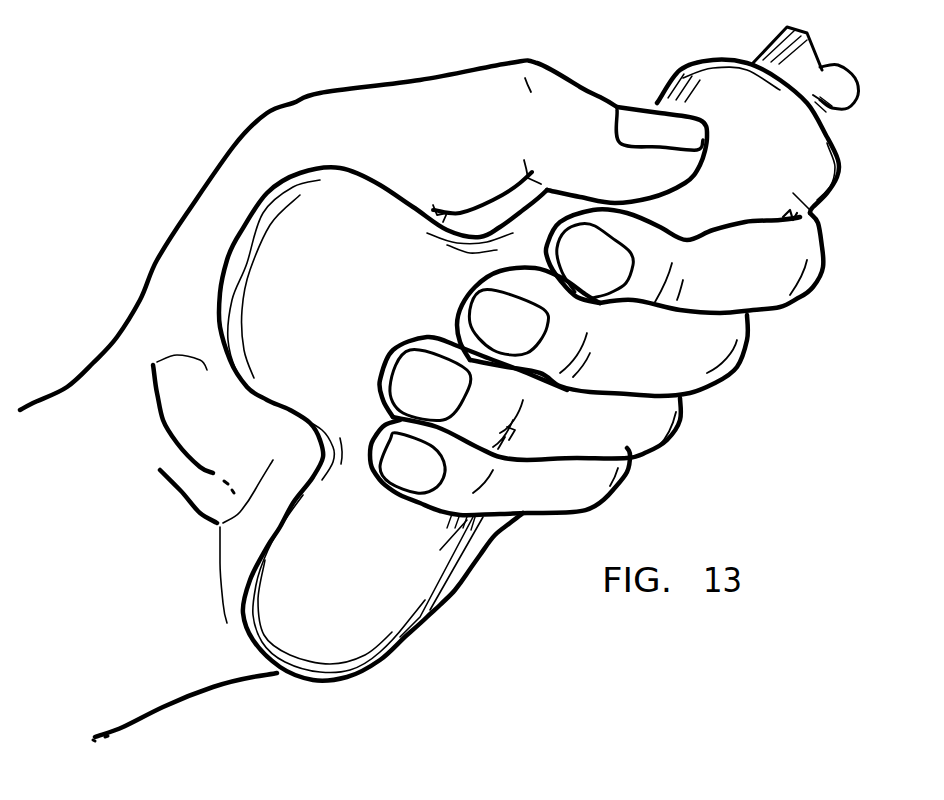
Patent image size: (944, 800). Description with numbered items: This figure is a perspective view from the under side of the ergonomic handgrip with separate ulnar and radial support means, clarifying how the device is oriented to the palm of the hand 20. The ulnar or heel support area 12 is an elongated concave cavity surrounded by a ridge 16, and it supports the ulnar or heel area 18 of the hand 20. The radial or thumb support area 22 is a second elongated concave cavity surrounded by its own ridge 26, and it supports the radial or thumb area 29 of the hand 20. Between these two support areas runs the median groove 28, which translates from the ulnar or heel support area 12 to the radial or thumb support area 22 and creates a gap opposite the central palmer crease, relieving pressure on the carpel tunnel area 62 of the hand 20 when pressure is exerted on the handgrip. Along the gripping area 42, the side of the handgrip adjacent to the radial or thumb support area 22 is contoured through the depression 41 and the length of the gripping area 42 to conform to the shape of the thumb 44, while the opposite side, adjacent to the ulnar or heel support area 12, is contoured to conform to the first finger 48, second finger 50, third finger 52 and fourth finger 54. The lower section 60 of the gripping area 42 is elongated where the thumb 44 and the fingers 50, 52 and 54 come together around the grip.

The ulnar or heel support area 12 is at (372, 678).
The ridge 16 is at (289, 681).
The ulnar or heel area 18 is at (450, 583).
The hand 20 is at (228, 128).
The radial or thumb support area 22 is at (210, 232).
The ridge 26 is at (302, 172).
The median groove 28 is at (313, 480).
The radial or thumb area 29 is at (157, 367).
The depression 41 is at (490, 254).
The gripping area 42 is at (773, 168).
The thumb 44 is at (583, 137).
The first finger 48 is at (761, 285).
The second finger 50 is at (665, 366).
The third finger 52 is at (590, 430).
The fourth finger 54 is at (555, 490).
The lower section 60 is at (818, 224).
The carpel tunnel area 62 is at (220, 527).